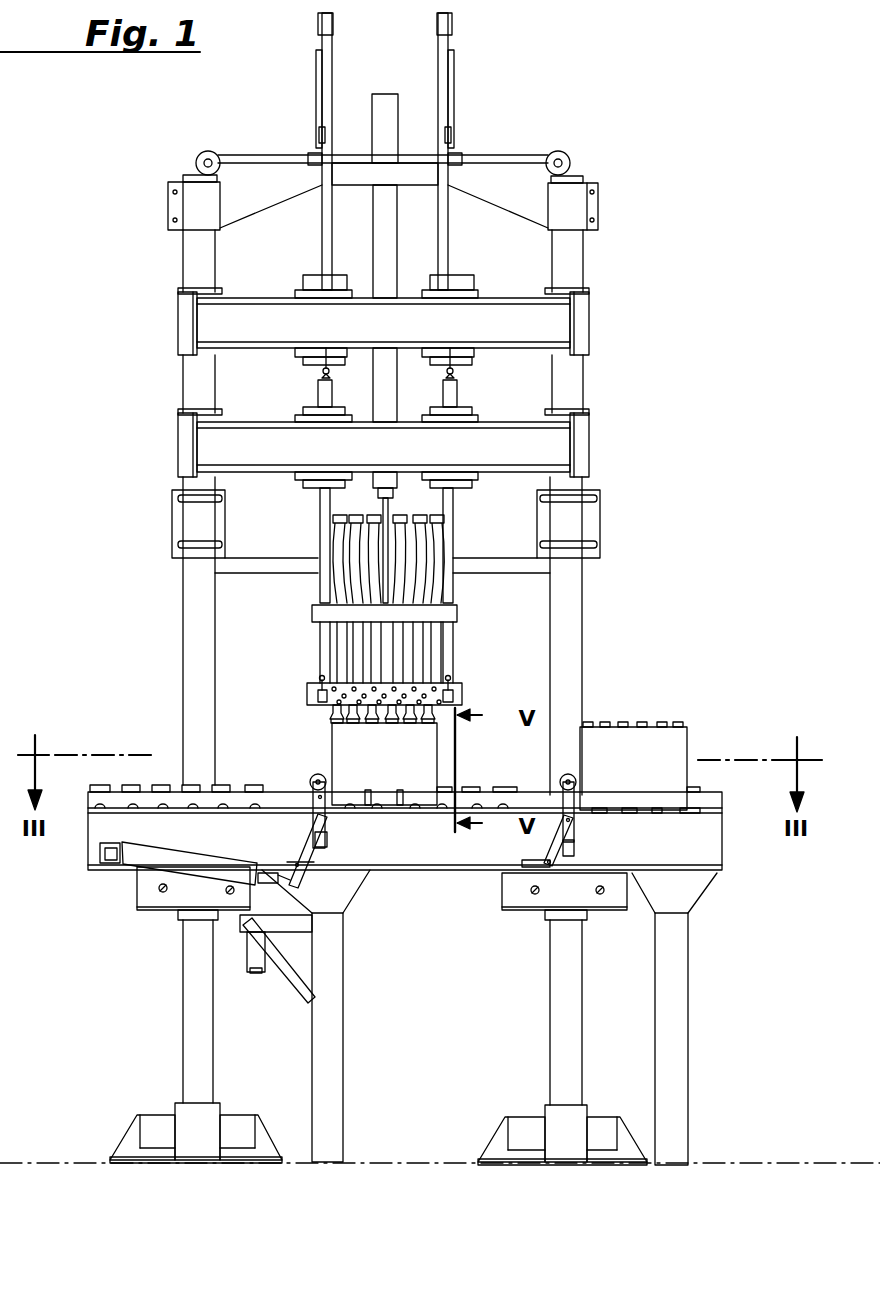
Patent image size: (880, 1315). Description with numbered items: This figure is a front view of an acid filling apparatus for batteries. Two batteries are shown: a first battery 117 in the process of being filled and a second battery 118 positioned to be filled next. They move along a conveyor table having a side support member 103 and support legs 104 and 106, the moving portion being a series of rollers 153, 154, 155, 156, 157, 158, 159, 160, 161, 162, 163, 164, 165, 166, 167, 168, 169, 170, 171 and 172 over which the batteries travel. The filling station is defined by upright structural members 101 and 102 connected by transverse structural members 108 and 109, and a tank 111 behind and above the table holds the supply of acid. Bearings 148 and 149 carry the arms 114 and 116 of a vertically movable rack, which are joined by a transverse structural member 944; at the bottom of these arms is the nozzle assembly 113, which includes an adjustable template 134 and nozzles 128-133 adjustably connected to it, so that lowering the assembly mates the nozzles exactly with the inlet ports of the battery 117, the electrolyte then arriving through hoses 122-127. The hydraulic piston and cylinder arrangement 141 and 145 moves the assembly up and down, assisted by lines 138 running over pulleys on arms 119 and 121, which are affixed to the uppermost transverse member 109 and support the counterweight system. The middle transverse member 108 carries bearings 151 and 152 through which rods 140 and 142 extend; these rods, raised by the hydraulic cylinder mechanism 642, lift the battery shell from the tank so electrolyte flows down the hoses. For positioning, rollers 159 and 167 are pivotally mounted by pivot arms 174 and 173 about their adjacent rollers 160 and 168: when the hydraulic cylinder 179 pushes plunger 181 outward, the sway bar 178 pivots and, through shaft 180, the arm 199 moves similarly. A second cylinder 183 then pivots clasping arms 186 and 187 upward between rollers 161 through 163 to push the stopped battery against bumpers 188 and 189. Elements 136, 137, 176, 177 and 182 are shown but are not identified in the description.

The upright structural member 101 is at (580, 258).
The upright structural member 102 is at (195, 258).
The side support member 103 is at (102, 822).
The support leg 104 is at (340, 1020).
The support leg 106 is at (688, 1020).
The middle transverse structural support member 108 is at (505, 300).
The uppermost transverse structural member 109 is at (511, 198).
The tank 111 is at (240, 660).
The nozzle assembly 113 is at (455, 669).
The arm 114 is at (322, 534).
The arm 116 is at (450, 526).
The first battery 117 is at (373, 757).
The second battery 118 is at (640, 746).
The arm 119 is at (320, 80).
The arm 121 is at (455, 95).
The hoses 122-127 is at (335, 652).
The nozzles 128-133 is at (428, 718).
The adjustable template 134 is at (458, 690).
The right guide block 136 is at (462, 695).
The left guide block 137 is at (316, 695).
The lines 138 is at (322, 318).
The support arm 140 is at (322, 218).
The hydraulic piston and cylinder arrangement 141 is at (393, 368).
The support arm 142 is at (443, 248).
The hydraulic piston and cylinder arrangement 145 is at (392, 500).
The bearing 148 is at (305, 410).
The bearing 149 is at (475, 412).
The bearing 151 is at (308, 290).
The bearing 152 is at (465, 290).
The roller 153 is at (97, 808).
The roller 154 is at (140, 808).
The roller 155 is at (162, 810).
The roller 156 is at (193, 810).
The roller 157 is at (223, 810).
The roller 158 is at (256, 810).
The pivotable roller 159 is at (316, 774).
The roller 160 is at (332, 808).
The roller 161 is at (364, 810).
The roller 162 is at (390, 810).
The roller 163 is at (403, 810).
The roller 164 is at (446, 812).
The roller 165 is at (471, 790).
The roller 166 is at (510, 815).
The pivotable roller 167 is at (565, 774).
The roller 168 is at (580, 810).
The roller 169 is at (600, 808).
The roller 170 is at (628, 812).
The roller 171 is at (656, 809).
The roller 172 is at (690, 812).
The pivot arm 173 is at (560, 792).
The pivot arm 174 is at (316, 790).
The right link 176 is at (575, 848).
The left link 177 is at (325, 846).
The sway bar 178 is at (297, 850).
The hydraulic cylinder 179 is at (140, 857).
The shaft 180 is at (440, 875).
The plunger 181 is at (290, 885).
The lever mount 182 is at (110, 855).
The cylinder 183 is at (248, 965).
The clasping arm 186 is at (401, 798).
The clasping arm 187 is at (366, 798).
The bumper 188 is at (97, 787).
The bumper 189 is at (131, 787).
The arm 199 is at (547, 850).
The hydraulic cylinder mechanism 642 is at (388, 103).
The transverse structural member 944 is at (318, 612).